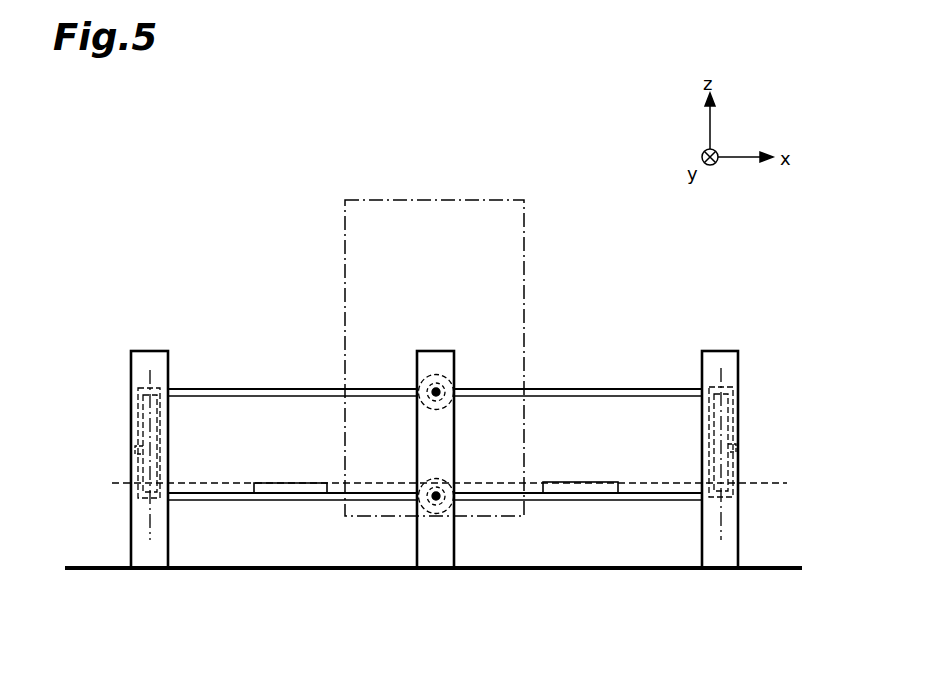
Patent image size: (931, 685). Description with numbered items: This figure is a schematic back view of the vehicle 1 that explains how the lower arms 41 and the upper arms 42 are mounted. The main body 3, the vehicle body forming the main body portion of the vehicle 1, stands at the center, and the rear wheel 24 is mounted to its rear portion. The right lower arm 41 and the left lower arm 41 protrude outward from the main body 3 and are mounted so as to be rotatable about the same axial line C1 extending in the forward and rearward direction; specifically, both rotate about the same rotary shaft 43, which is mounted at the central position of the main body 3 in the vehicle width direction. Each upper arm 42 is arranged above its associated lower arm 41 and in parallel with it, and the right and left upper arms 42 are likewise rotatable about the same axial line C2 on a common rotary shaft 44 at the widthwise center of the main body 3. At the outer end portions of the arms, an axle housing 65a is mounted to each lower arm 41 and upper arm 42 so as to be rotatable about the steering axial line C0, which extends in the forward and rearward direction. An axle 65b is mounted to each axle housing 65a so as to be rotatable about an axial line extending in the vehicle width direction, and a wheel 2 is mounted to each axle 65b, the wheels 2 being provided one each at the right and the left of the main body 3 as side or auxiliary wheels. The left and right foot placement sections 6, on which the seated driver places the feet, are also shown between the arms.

The vehicle 1 is at (268, 229).
The wheel 2 is at (150, 352).
The main body 3 is at (524, 283).
The foot placement section 6 is at (287, 482).
The rear wheel 24 is at (455, 545).
The lower arm 41 is at (225, 492).
The upper arm 42 is at (257, 388).
The rotary shaft 43 is at (455, 511).
The rotary shaft 44 is at (448, 375).
The axle housing 65a is at (143, 438).
The axle 65b is at (138, 448).
The steering axial line C0 is at (150, 525).
The axial line C1 is at (434, 498).
The axial line C2 is at (433, 390).